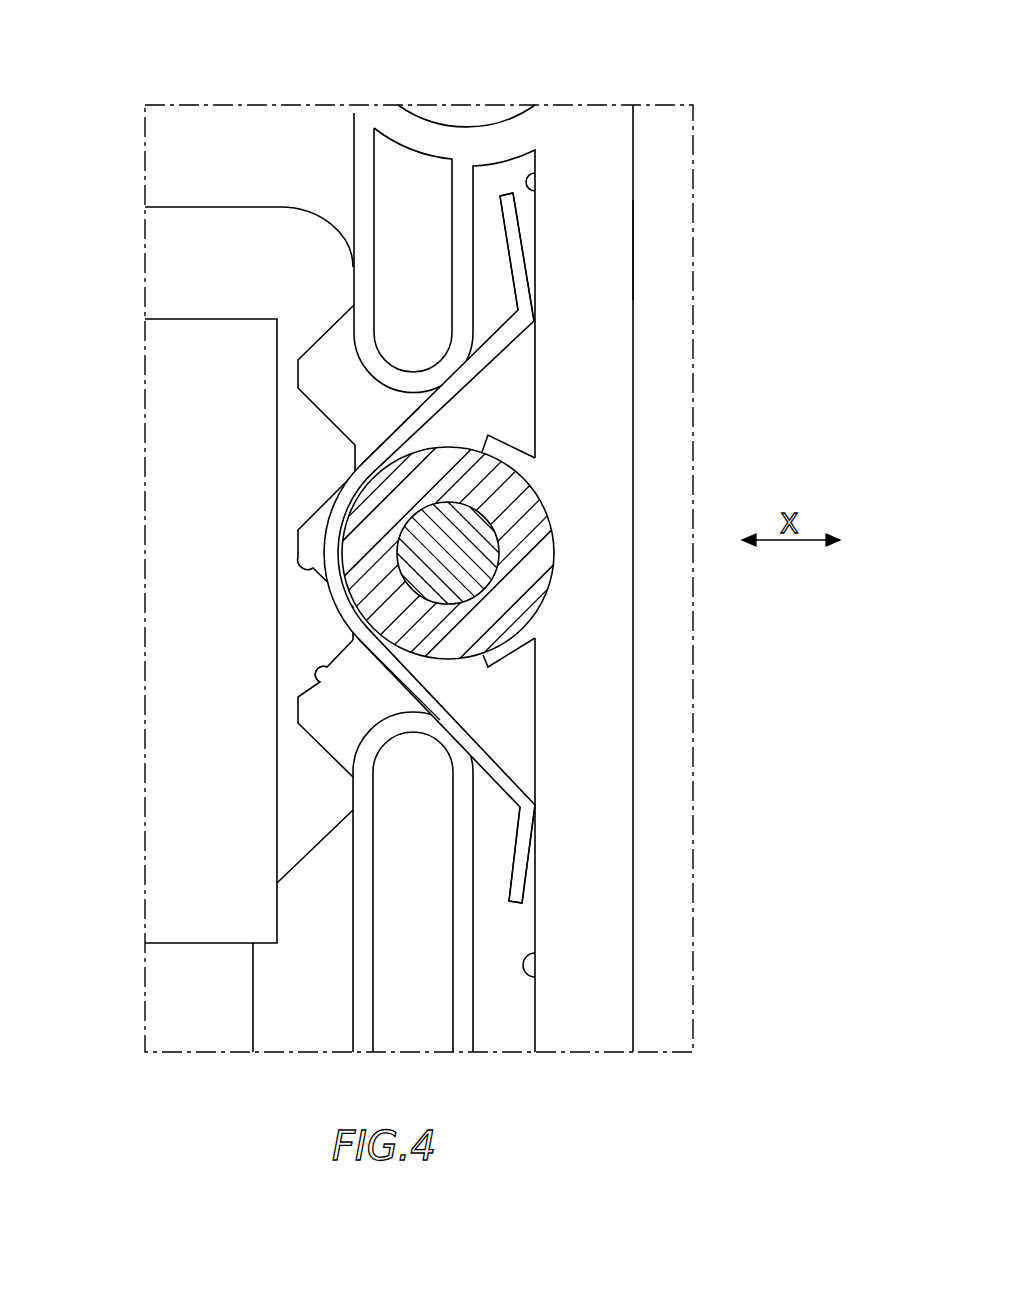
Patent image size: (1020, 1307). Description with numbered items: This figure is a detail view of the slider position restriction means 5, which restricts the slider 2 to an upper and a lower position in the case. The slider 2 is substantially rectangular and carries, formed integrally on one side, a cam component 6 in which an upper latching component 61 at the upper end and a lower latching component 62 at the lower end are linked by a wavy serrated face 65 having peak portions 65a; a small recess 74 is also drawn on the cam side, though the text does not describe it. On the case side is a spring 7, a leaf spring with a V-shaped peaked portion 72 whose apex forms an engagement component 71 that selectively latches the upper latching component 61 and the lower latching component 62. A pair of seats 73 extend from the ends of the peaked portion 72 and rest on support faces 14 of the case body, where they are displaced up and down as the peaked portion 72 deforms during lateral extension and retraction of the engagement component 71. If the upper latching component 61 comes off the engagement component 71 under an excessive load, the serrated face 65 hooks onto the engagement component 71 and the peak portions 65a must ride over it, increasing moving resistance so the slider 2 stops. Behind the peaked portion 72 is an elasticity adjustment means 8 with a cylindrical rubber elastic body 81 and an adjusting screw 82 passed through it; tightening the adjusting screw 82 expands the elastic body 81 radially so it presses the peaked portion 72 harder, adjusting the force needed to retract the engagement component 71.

The slider 2 is at (178, 225).
The slider position restriction means 5 is at (430, 578).
The cam component 6 is at (413, 554).
The spring 7 is at (418, 578).
The elasticity adjustment means 8 is at (585, 581).
The support faces 14 is at (535, 196).
The upper latching component 61 is at (315, 217).
The lower latching component 62 is at (300, 862).
The serrated face 65 is at (313, 678).
The peak portions 65a is at (353, 612).
The engagement component 71 is at (324, 538).
The peaked portion 72 is at (405, 781).
The seats 73 is at (520, 267).
The recess 74 is at (298, 550).
The elastic body 81 is at (530, 628).
The adjusting screw 82 is at (482, 558).